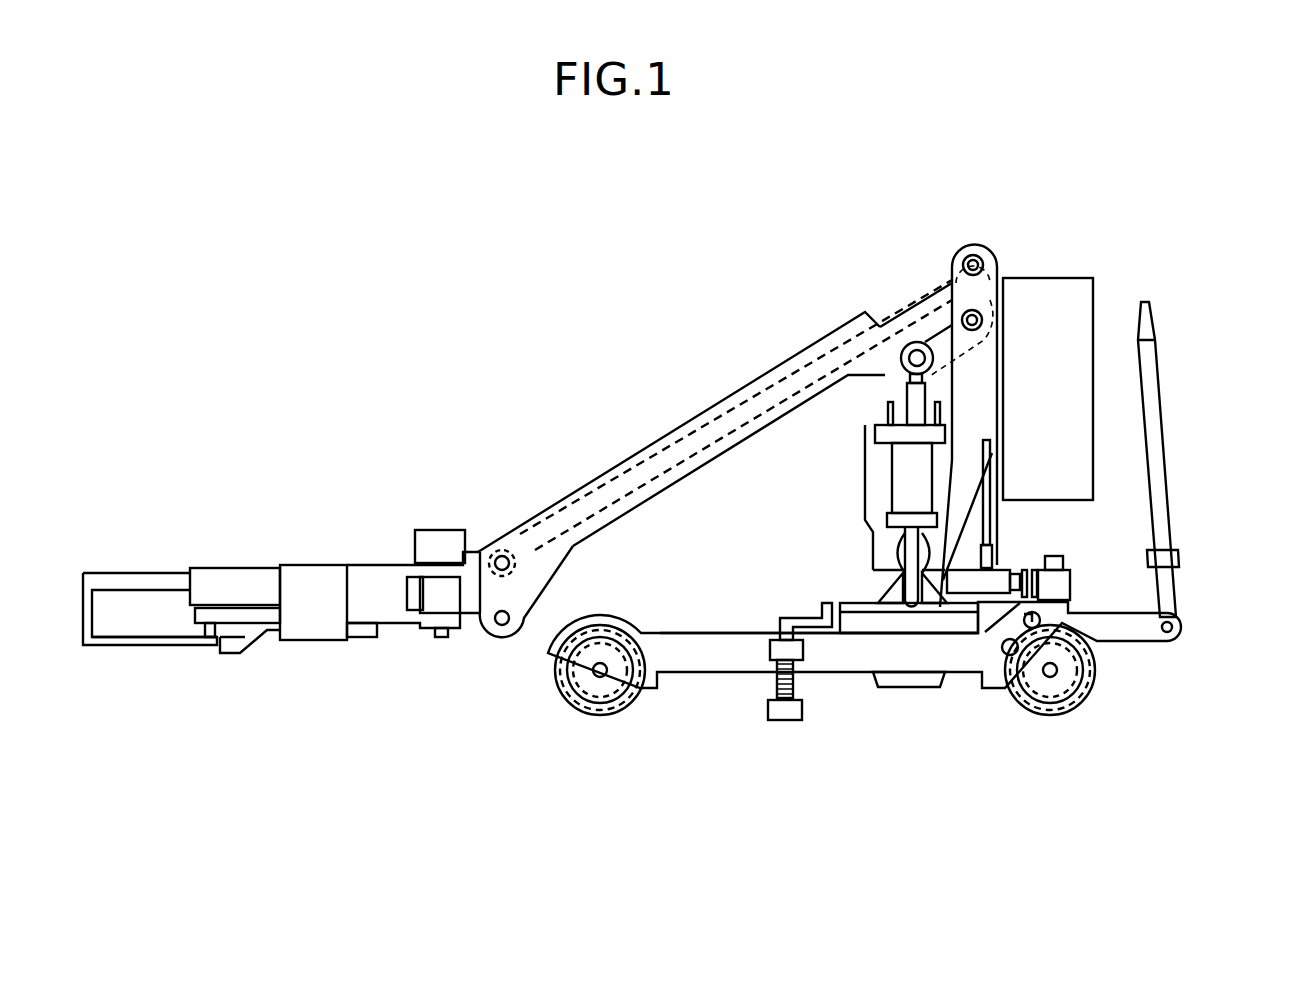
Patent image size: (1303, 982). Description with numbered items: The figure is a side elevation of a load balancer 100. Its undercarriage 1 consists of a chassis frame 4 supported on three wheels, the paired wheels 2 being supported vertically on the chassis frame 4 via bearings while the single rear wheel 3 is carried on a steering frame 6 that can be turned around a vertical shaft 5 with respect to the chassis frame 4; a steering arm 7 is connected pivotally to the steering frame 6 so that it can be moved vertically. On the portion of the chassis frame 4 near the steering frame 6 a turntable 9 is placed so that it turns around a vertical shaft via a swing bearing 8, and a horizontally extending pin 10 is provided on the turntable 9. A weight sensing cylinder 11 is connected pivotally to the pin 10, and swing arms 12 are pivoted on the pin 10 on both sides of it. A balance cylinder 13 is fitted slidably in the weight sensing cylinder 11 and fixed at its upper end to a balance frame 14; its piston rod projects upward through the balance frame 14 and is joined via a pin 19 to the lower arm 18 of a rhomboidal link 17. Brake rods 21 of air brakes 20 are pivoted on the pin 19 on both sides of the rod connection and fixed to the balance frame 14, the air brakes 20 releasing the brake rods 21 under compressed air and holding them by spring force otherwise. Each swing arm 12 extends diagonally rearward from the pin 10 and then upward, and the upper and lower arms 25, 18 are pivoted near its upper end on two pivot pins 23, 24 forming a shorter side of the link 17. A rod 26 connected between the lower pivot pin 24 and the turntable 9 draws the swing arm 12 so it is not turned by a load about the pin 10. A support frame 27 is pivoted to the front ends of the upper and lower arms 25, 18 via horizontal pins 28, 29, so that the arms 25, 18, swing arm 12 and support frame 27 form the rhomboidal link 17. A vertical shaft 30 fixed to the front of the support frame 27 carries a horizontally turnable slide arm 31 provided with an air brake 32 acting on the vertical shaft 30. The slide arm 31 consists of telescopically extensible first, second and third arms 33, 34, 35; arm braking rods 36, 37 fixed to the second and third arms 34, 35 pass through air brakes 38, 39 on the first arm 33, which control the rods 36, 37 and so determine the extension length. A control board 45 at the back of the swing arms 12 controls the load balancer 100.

The load balancer 100 is at (1168, 190).
The undercarriage 1 is at (553, 651).
The paired wheels 2 is at (615, 713).
The rear wheel 3 is at (1078, 705).
The chassis frame 4 is at (700, 632).
The vertical shaft 5 is at (1068, 580).
The steering frame 6 is at (1083, 650).
The steering arm 7 is at (1158, 405).
The swing bearing 8 is at (876, 688).
The turntable 9 is at (822, 612).
The horizontally extending pin 10 is at (872, 584).
The weight sensing cylinder 11 is at (880, 556).
The swing arm 12 is at (985, 252).
The balance cylinder 13 is at (866, 466).
The balance frame 14 is at (884, 418).
The rhomboidal link 17 is at (715, 411).
The lower arm 18 is at (930, 325).
The pin 19 is at (903, 369).
The air brake 20 is at (880, 488).
The brake rod 21 is at (898, 538).
The pivot pin 23 is at (966, 258).
The pivot pin 24 is at (962, 318).
The upper arm 25 is at (883, 313).
The rod 26 is at (992, 536).
The support frame 27 is at (476, 620).
The horizontal pin 28 is at (502, 550).
The horizontal pin 29 is at (530, 610).
The vertical shaft 30 is at (440, 637).
The slide arm 31 is at (281, 589).
The air brake 32 is at (440, 530).
The first arm 33 is at (410, 565).
The second arm 34 is at (245, 568).
The third arm 35 is at (120, 573).
The arm braking rod 36 is at (150, 645).
The arm braking rod 37 is at (210, 637).
The air brake 38 is at (360, 637).
The air brake 39 is at (240, 653).
The control board 45 is at (1086, 298).